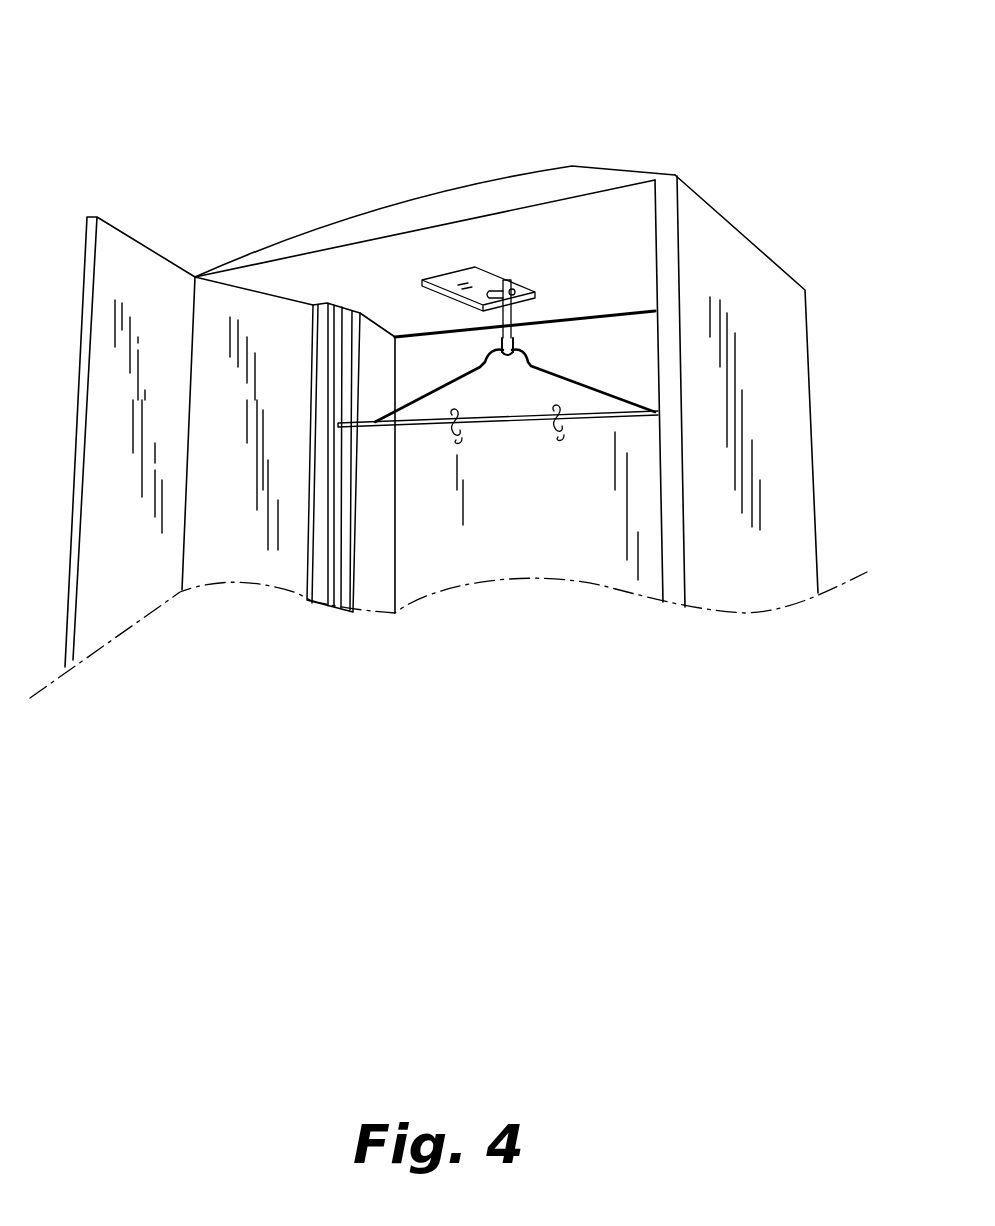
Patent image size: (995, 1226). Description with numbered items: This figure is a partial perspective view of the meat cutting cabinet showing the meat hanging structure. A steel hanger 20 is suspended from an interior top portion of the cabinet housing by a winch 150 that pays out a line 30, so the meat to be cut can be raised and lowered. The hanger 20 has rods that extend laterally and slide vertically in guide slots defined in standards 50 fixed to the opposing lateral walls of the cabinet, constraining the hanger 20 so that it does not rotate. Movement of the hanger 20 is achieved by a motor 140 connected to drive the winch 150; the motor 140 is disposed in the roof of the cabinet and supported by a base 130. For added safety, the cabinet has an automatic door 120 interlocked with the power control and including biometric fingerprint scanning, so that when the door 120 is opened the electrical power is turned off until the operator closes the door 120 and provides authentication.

The hanger 20 is at (518, 427).
The line 30 is at (513, 320).
The standards 50 is at (310, 557).
The automatic door 120 is at (117, 560).
The base 130 is at (422, 281).
The motor 140 is at (500, 278).
The winch 150 is at (524, 288).